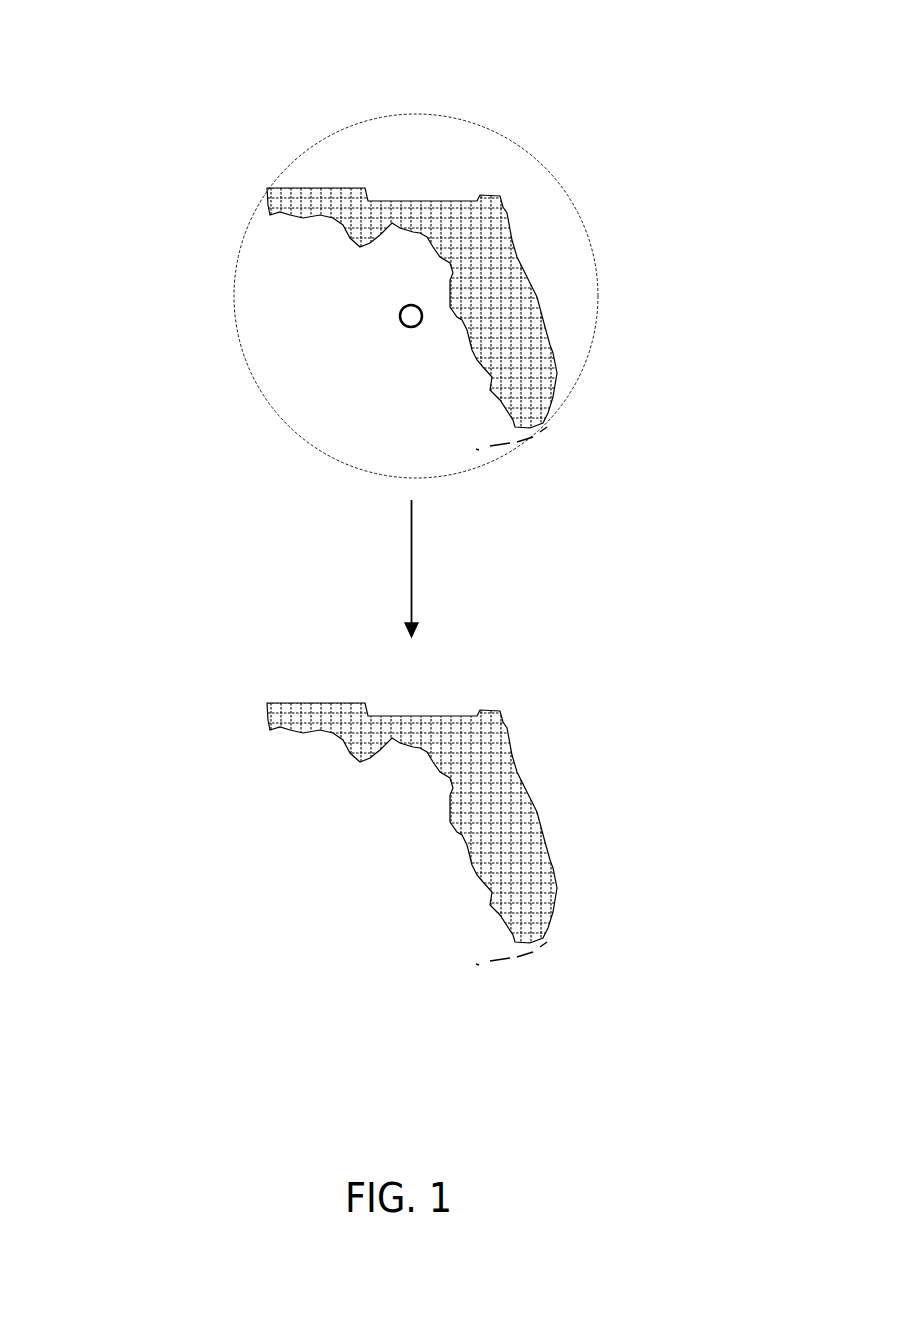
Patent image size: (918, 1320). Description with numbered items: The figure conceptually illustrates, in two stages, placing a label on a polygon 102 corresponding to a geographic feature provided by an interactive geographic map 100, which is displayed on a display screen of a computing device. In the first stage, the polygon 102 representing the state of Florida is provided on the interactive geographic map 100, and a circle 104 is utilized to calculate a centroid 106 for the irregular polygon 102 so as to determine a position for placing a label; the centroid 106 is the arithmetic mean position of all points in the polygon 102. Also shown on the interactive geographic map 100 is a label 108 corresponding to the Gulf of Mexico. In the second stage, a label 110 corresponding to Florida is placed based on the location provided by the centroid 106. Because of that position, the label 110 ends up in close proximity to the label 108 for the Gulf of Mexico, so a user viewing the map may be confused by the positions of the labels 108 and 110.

The interactive geographic map 100 is at (754, 134).
The polygon 102 is at (318, 187).
The circle 104 is at (302, 152).
The centroid 106 is at (399, 316).
The label 108 is at (270, 348).
The label 110 is at (375, 830).